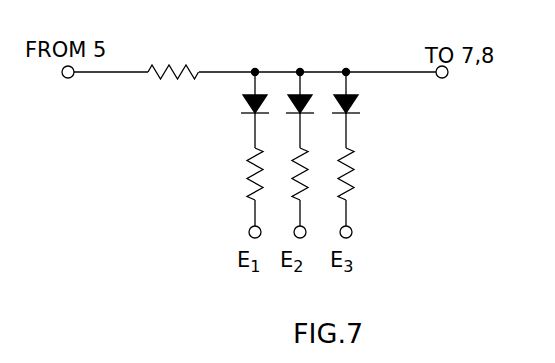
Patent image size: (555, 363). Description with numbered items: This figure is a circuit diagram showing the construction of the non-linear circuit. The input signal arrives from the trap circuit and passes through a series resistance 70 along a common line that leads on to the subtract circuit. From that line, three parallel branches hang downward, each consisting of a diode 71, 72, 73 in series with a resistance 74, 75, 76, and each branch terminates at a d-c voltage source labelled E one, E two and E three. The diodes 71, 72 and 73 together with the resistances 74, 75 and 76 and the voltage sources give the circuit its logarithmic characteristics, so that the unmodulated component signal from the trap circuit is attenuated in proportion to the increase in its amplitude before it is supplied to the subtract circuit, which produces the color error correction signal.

The resistance 70 is at (184, 66).
The diode 71 is at (247, 98).
The diode 72 is at (291, 98).
The diode 73 is at (354, 100).
The resistance 74 is at (248, 180).
The resistance 75 is at (292, 183).
The resistance 76 is at (359, 185).